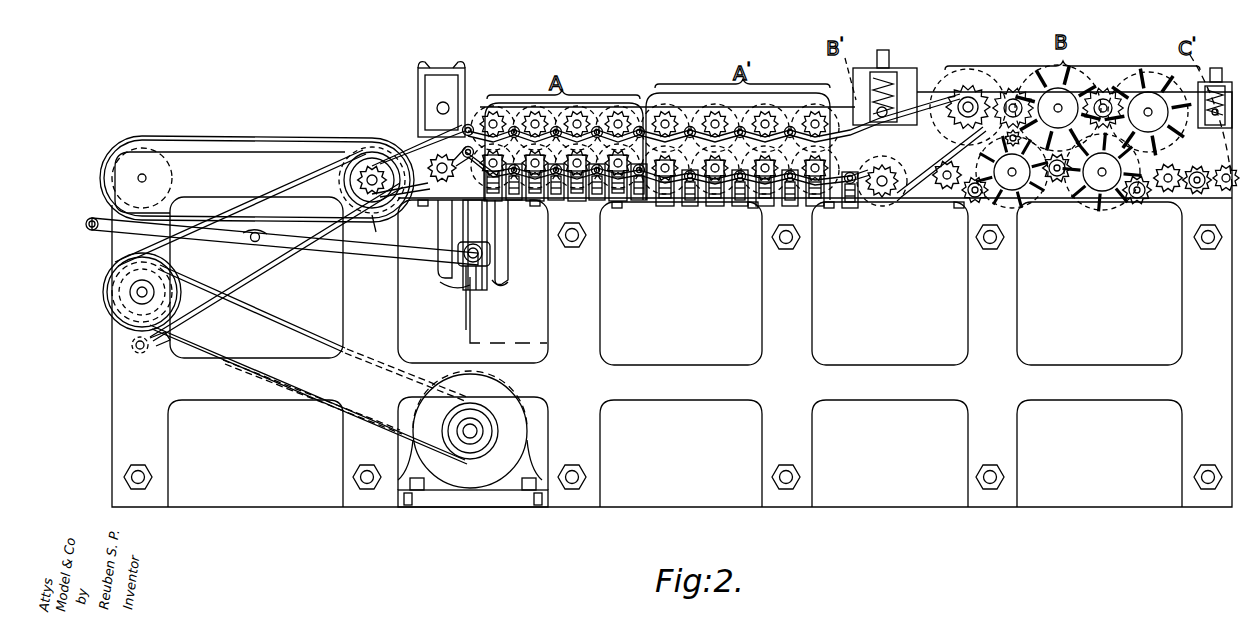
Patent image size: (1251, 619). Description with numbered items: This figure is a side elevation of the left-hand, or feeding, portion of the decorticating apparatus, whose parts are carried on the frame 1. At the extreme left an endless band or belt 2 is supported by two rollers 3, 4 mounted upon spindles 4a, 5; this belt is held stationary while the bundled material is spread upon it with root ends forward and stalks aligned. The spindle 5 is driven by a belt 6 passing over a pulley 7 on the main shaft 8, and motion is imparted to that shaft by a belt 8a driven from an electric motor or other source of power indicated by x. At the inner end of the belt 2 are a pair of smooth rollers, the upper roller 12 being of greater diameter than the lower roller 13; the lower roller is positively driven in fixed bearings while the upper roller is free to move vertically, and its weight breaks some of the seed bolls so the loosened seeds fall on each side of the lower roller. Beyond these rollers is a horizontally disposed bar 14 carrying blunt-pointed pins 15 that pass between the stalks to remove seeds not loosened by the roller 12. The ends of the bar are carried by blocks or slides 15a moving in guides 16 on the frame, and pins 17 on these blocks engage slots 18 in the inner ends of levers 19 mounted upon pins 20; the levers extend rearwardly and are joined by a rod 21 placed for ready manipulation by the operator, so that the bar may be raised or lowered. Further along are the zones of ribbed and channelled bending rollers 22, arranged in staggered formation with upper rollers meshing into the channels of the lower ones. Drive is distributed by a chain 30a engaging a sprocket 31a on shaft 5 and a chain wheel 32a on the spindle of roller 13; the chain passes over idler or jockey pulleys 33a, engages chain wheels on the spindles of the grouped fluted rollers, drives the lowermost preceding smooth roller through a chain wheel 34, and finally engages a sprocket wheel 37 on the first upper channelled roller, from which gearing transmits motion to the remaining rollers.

The frame 1 is at (672, 299).
The endless band or belt 2 is at (260, 137).
The roller 3 is at (135, 135).
The roller 4 is at (372, 138).
The spindle 4a is at (148, 178).
The spindle 5 is at (352, 184).
The belt 6 is at (306, 260).
The pulley 7 is at (103, 295).
The main shaft 8 is at (133, 303).
The belt 8a is at (300, 330).
The upper smooth roller 12 is at (472, 100).
The lower smooth roller 13 is at (442, 212).
The bar 14 is at (482, 250).
The pins 15 is at (478, 220).
The blocks or slides 15a is at (476, 262).
The guides 16 is at (506, 256).
The pins 17 is at (474, 278).
The slots 18 is at (464, 303).
The levers 19 is at (388, 262).
The pins 20 is at (253, 243).
The rod or bar 21 is at (90, 232).
The bending rollers 22 is at (985, 70).
The chain 30a is at (682, 192).
The sprocket or chain wheel 31a is at (376, 232).
The chain wheel 32a is at (438, 157).
The idler or jockey pulleys 33a is at (467, 148).
The chain wheel 34 is at (888, 200).
The sprocket wheel 37 is at (941, 162).
The electric motor or other source of power x is at (470, 429).